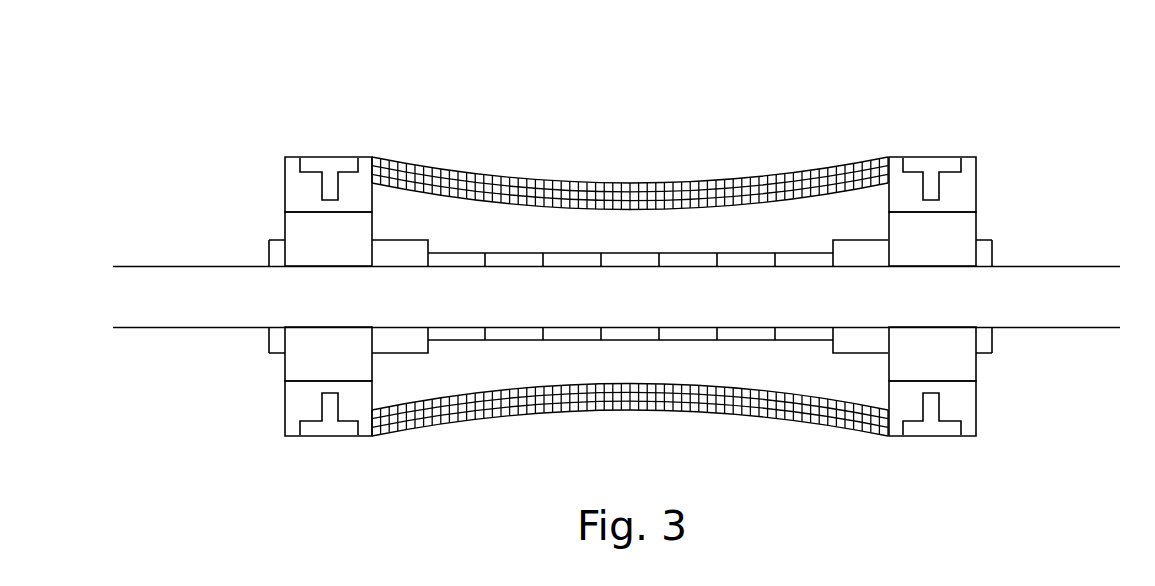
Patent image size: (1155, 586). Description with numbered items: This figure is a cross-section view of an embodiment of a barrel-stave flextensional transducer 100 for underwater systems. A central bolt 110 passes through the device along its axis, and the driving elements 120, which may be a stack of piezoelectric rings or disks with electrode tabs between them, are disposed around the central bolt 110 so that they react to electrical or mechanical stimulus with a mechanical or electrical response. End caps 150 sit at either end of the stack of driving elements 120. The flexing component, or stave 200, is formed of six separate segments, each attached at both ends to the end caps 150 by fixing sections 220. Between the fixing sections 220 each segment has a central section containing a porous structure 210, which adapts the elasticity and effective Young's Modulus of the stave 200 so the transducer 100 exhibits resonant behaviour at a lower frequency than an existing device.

The flextensional transducer 100 is at (248, 37).
The central bolt 110 is at (1078, 298).
The driving elements 120 is at (683, 335).
The end caps 150 is at (297, 353).
The stave 200 is at (305, 197).
The porous structure 210 is at (503, 187).
The fixing sections 220 is at (932, 425).